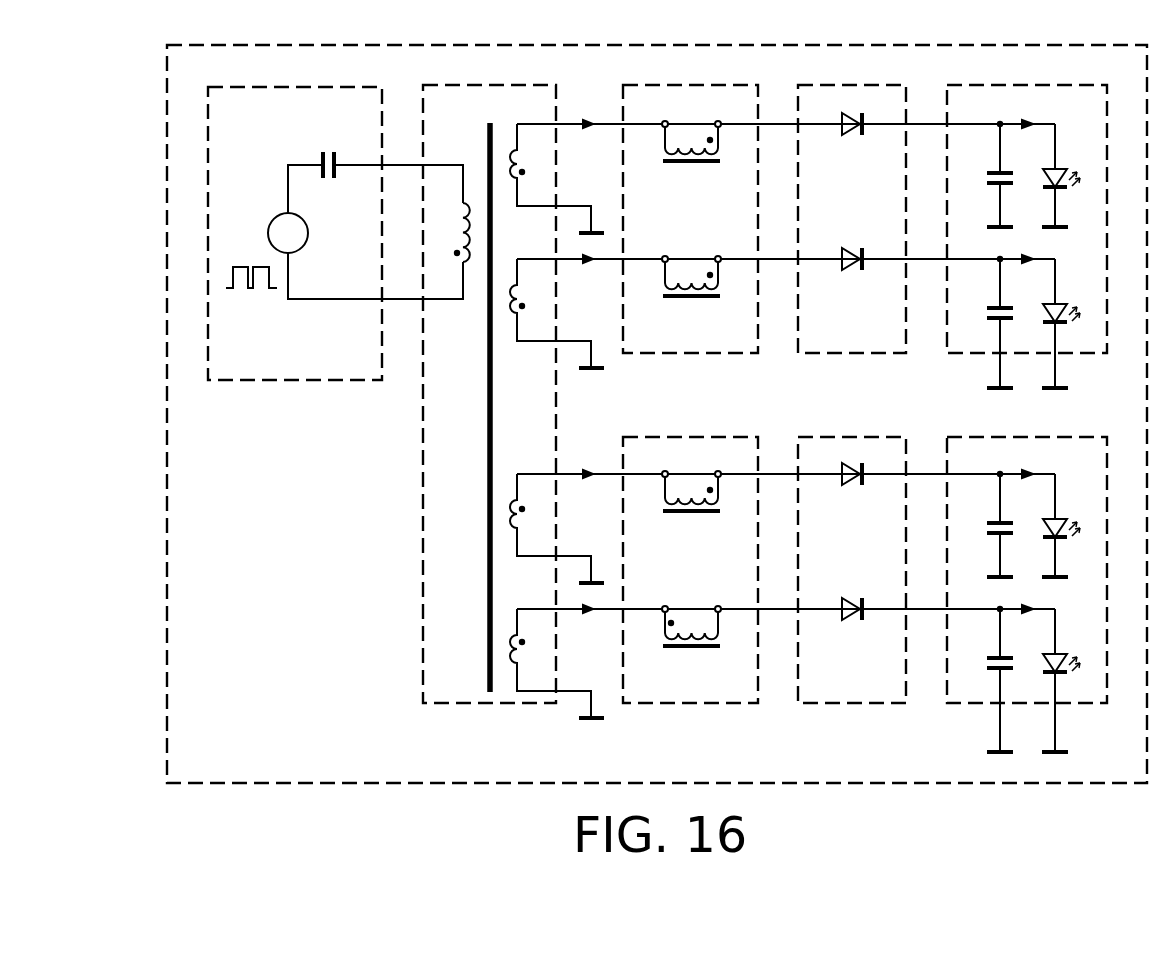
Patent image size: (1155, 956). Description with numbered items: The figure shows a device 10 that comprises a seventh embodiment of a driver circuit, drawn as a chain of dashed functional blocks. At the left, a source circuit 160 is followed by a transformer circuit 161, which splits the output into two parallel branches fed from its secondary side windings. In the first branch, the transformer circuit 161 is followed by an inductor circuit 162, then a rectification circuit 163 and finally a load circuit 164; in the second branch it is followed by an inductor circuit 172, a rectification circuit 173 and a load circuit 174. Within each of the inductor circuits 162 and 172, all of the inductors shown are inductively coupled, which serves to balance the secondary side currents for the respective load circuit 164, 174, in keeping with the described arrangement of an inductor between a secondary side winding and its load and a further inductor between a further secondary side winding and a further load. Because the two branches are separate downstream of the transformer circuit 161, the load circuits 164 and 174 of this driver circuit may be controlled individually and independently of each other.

The device 10 is at (1045, 783).
The source circuit 160 is at (288, 380).
The transformer circuit 161 is at (495, 703).
The inductor circuit 162 is at (695, 353).
The rectification circuit 163 is at (857, 353).
The load circuit 164 is at (1104, 353).
The inductor circuit 172 is at (695, 703).
The rectification circuit 173 is at (857, 703).
The load circuit 174 is at (1104, 703).